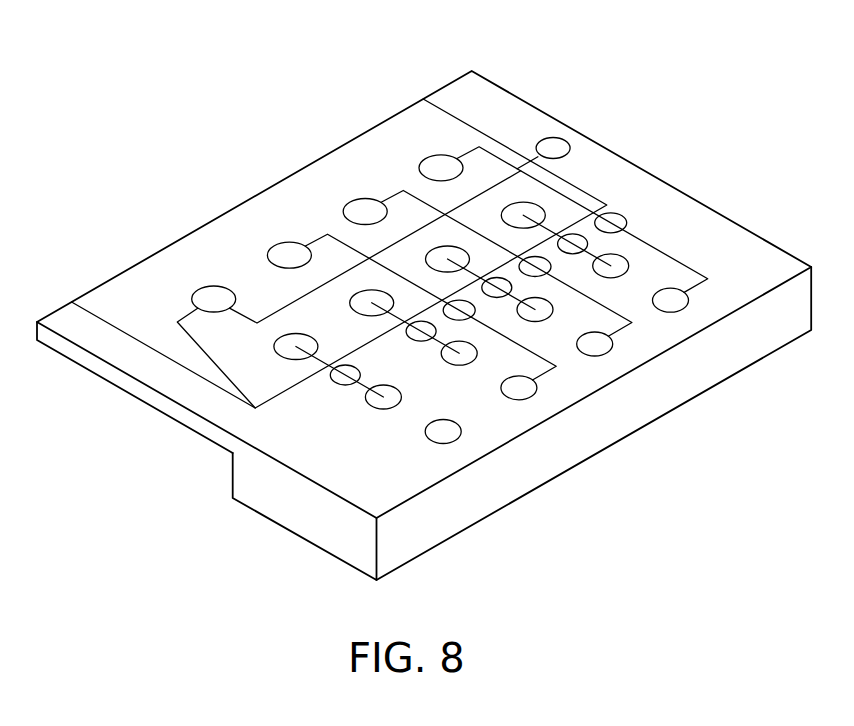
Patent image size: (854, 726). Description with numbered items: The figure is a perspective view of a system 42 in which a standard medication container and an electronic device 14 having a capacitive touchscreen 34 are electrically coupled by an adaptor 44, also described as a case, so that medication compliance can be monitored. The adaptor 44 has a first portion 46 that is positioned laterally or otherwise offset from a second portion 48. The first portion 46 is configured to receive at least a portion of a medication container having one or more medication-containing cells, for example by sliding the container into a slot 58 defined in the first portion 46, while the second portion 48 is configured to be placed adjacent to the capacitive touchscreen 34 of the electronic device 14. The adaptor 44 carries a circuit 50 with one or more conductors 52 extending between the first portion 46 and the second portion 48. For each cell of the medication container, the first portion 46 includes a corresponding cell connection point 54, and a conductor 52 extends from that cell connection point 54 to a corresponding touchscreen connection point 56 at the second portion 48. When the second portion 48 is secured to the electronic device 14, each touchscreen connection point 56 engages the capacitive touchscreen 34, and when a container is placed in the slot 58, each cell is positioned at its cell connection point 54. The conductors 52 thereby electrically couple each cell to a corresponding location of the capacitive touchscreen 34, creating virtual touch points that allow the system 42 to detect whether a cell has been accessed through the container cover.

The electronic device 14 is at (731, 364).
The capacitive touchscreen 34 is at (768, 258).
The system 42 is at (762, 122).
The adaptor 44 is at (642, 160).
The first portion 46 is at (64, 348).
The second portion 48 is at (313, 461).
The circuit 50 is at (569, 136).
The conductor 52 is at (323, 158).
The cell connection point 54 is at (208, 291).
The touchscreen connection point 56 is at (402, 396).
The slot 58 is at (96, 317).